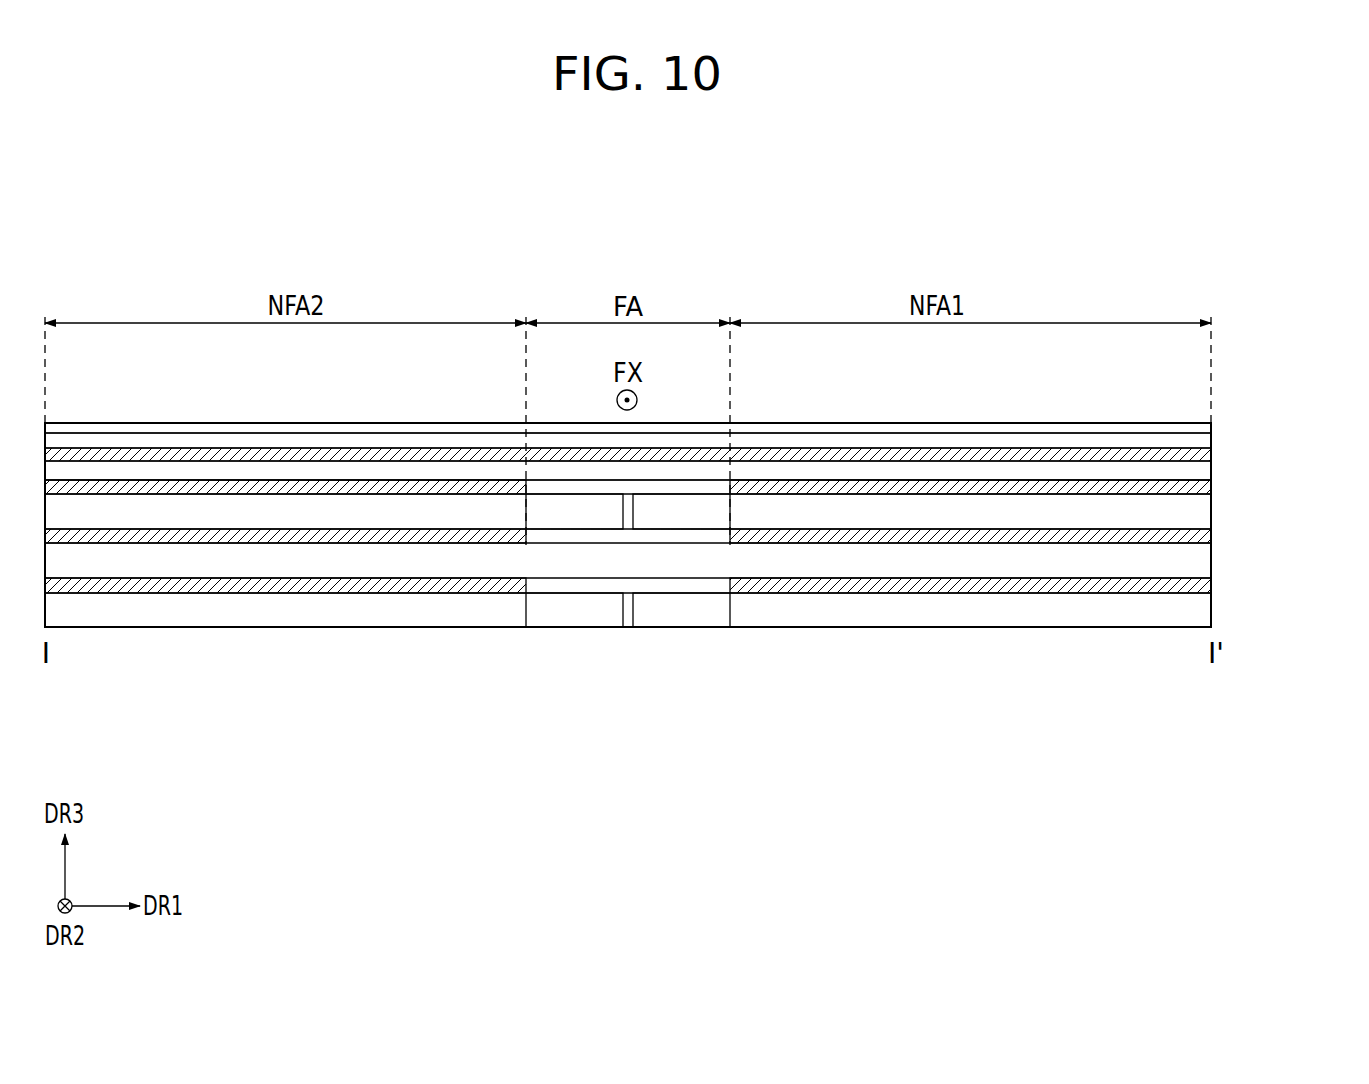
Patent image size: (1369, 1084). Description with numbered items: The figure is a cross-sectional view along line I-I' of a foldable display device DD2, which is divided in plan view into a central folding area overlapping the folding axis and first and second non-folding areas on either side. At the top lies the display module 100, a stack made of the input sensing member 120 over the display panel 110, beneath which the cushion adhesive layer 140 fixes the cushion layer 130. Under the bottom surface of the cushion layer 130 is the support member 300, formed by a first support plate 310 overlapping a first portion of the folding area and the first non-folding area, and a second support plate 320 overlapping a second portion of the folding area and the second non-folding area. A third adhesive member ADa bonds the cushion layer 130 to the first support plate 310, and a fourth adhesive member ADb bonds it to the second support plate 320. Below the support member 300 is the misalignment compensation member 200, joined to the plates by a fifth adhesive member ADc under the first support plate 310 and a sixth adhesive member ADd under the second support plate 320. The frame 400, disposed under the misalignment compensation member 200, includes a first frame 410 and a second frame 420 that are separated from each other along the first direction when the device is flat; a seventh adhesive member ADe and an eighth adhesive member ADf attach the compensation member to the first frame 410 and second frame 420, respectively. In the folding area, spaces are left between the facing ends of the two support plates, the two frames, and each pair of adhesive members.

The display device DD2 is at (1162, 268).
The display module 100 is at (703, 456).
The input sensing member 120 is at (1200, 429).
The display panel 110 is at (1200, 442).
The cushion adhesive layer 140 is at (1208, 455).
The cushion layer 130 is at (673, 487).
The misalignment compensation member 200 is at (1200, 562).
The support member 300 is at (628, 658).
The first support plate 310 is at (705, 635).
The second support plate 320 is at (500, 518).
The frame 400 is at (628, 669).
The first frame 410 is at (681, 647).
The second frame 420 is at (557, 615).
The third adhesive member ADa is at (983, 488).
The fourth adhesive member ADb is at (270, 486).
The fifth adhesive member ADc is at (912, 540).
The sixth adhesive member ADd is at (340, 540).
The seventh adhesive member ADe is at (847, 590).
The eighth adhesive member ADf is at (405, 590).